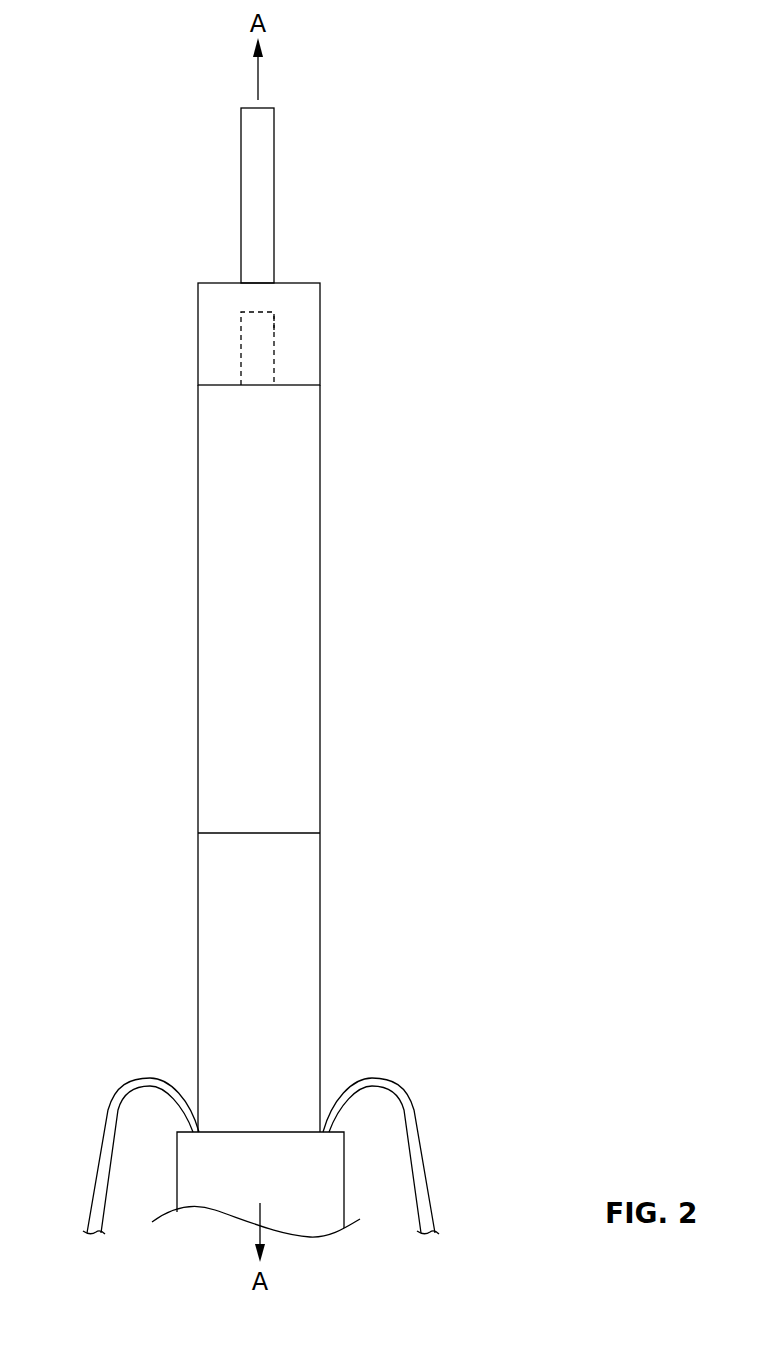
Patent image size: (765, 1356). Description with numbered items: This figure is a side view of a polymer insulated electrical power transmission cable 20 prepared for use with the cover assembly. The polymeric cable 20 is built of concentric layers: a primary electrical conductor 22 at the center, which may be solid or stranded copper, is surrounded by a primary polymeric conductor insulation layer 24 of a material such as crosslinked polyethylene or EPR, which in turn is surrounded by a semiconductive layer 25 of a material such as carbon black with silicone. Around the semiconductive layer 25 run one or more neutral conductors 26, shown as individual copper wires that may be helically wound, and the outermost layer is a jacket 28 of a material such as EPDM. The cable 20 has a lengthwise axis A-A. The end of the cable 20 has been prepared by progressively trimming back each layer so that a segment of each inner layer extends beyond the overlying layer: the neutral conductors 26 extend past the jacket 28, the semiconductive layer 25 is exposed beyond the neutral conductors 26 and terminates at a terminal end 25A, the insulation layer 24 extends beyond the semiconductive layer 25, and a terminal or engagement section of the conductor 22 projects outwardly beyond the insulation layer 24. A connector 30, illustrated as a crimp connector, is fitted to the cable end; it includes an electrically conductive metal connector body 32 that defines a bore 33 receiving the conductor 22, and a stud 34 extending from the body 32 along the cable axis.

The polymer insulated electrical power transmission cable 20 is at (279, 672).
The primary electrical conductor 22 is at (255, 365).
The primary polymeric conductor insulation layer 24 is at (303, 458).
The semiconductive layer 25 is at (302, 953).
The terminal end 25A is at (293, 833).
The neutral conductors 26 is at (102, 1153).
The jacket 28 is at (322, 1192).
The connector 30 is at (256, 325).
The connector body 32 is at (298, 362).
The bore 33 is at (275, 327).
The stud 34 is at (263, 190).